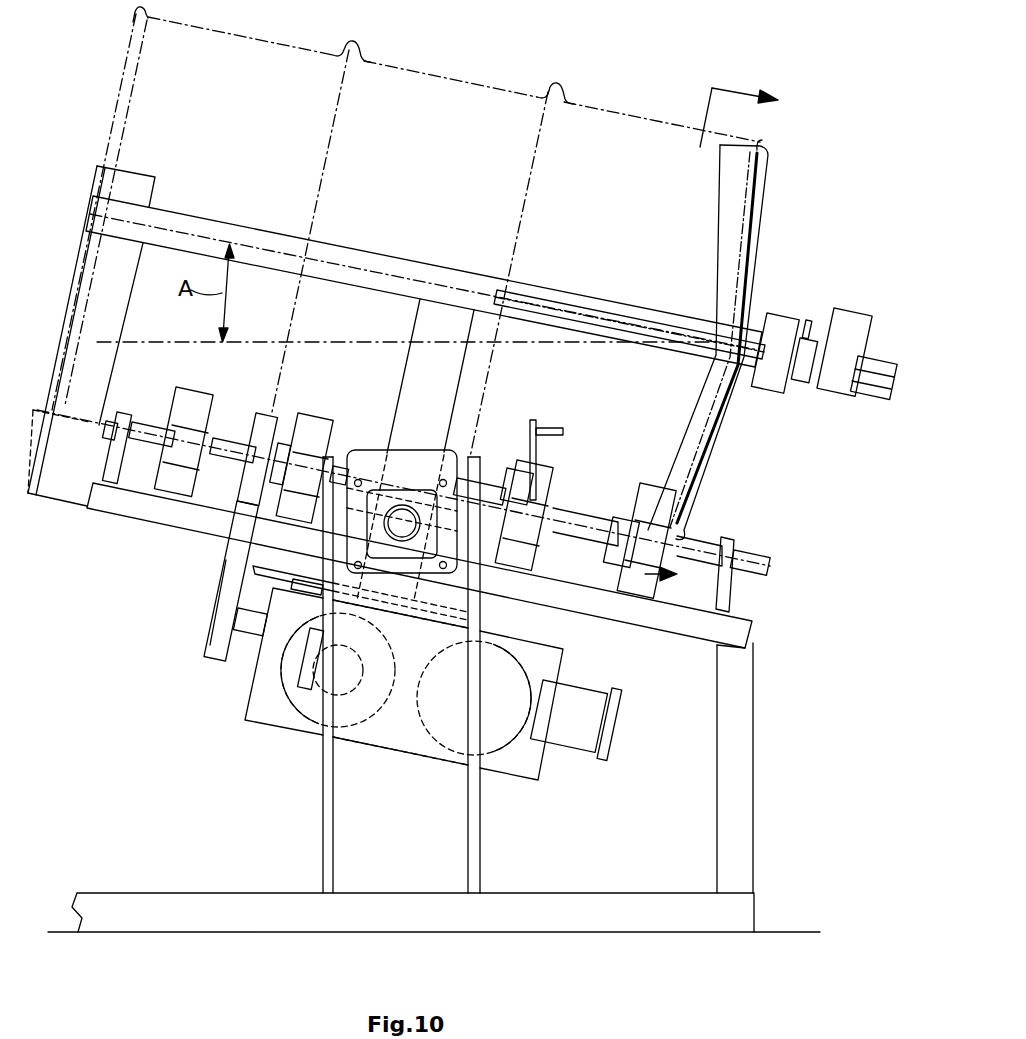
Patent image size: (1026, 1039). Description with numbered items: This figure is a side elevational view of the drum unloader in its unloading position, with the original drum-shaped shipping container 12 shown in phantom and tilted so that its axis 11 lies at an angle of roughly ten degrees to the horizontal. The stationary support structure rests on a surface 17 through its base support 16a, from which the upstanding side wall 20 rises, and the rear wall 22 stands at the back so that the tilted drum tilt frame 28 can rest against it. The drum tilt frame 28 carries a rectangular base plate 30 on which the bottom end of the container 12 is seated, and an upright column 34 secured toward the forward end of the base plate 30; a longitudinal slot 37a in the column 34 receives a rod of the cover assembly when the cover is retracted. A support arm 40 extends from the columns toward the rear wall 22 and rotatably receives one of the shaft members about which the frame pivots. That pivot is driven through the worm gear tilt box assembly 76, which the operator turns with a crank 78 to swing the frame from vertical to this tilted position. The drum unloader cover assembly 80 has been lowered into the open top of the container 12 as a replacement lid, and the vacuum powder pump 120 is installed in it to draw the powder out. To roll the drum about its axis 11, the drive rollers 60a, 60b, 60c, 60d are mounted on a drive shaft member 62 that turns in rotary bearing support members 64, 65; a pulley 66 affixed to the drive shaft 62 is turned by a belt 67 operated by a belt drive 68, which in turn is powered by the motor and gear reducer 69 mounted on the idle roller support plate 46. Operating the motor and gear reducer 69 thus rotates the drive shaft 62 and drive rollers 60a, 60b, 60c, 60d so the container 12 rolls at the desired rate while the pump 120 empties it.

The drum-shaped shipping container 12 is at (484, 90).
The axis 11 is at (545, 297).
The drum unloader cover assembly 80 is at (770, 256).
The vacuum powder pump 120 is at (851, 318).
The upright column 34 is at (879, 358).
The longitudinal slot 37a is at (882, 380).
The rectangular base plate 30 is at (42, 430).
The support arm 40 is at (432, 323).
The pulley 66 is at (256, 452).
The belt 67 is at (236, 550).
The drive roller 60c is at (313, 432).
The drive roller 60d is at (177, 480).
The drive roller 60b is at (535, 467).
The drive roller 60a is at (640, 582).
The rotary bearing support member 65 is at (110, 478).
The tilt box assembly 76 is at (373, 456).
The crank 78 is at (530, 432).
The drive shaft member 62 is at (602, 530).
The rotary bearing support member 64 is at (712, 590).
The idle roller support plate 46 is at (587, 600).
The drum tilt frame 28 is at (163, 568).
The belt drive 68 is at (287, 710).
The motor and gear reducer 69 is at (517, 796).
The side wall 20 is at (363, 843).
The rear wall 22 is at (730, 745).
The base support 16a is at (413, 943).
The surface 17 is at (793, 935).